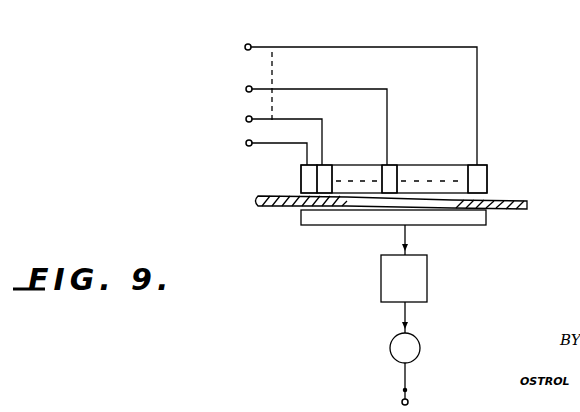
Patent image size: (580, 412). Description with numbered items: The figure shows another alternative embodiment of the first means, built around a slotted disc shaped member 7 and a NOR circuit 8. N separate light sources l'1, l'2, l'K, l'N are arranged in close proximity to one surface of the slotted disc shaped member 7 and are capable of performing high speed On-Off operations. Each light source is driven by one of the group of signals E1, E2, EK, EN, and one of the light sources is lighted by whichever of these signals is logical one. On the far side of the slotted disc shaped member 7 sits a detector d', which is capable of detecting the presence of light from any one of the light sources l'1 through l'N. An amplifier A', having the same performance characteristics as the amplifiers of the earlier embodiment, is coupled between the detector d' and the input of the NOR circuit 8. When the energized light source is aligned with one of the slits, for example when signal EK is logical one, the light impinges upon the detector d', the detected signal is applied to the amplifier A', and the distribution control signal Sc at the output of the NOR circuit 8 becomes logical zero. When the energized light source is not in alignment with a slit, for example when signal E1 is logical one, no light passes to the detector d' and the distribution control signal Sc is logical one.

The input signal E_N EN is at (323, 45).
The input signal E_K EK is at (322, 86).
The input signal E_2 E2 is at (318, 121).
The input signal E_1 E1 is at (286, 129).
The light source l'1 is at (282, 178).
The light source l'2 is at (337, 164).
The light source l'K is at (405, 161).
The light source l'N is at (502, 178).
The slotted disc shaped member 7 is at (514, 216).
The detector d' is at (393, 234).
The amplifier A' is at (404, 263).
The NOR circuit 8 is at (418, 343).
The distribution control signal Sc is at (407, 382).